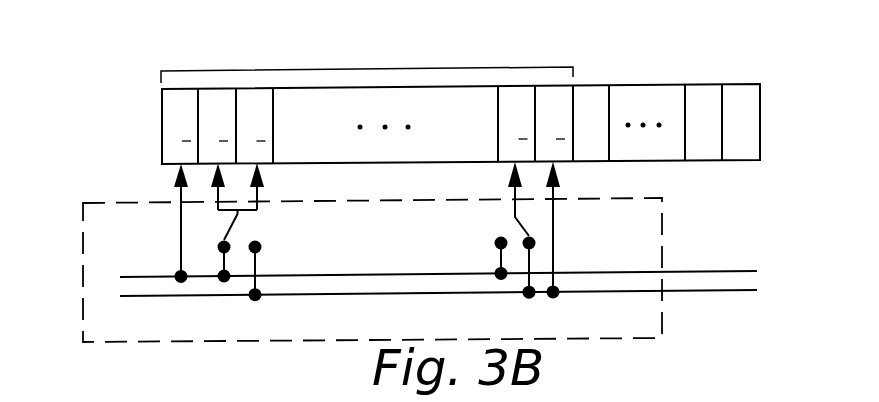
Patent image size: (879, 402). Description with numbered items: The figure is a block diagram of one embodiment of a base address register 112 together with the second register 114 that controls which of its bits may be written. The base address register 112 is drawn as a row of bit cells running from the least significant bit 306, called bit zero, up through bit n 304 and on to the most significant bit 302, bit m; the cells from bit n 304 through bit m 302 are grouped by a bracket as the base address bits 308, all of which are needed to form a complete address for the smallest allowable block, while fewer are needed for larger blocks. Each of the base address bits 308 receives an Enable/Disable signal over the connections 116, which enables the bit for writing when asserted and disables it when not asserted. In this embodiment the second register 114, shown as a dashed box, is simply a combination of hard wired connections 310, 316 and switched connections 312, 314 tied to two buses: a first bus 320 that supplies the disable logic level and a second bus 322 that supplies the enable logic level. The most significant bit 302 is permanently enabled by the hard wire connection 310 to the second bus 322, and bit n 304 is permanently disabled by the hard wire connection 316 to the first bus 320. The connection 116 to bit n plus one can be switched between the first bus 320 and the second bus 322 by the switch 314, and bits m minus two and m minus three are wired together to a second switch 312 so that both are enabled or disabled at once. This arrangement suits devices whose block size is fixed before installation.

The base address register 112 is at (160, 122).
The second register 114 is at (83, 232).
The connections 116 is at (175, 195).
The most significant bit 302 is at (182, 87).
The bit n 304 is at (553, 85).
The least significant bit 306 is at (740, 82).
The base address bits 308 is at (383, 67).
The hard wire connection 310 is at (168, 260).
The second switch 312 is at (270, 257).
The switch 314 is at (483, 253).
The hard wire connection 316 is at (558, 253).
The first bus 320 is at (697, 297).
The second bus 322 is at (697, 265).